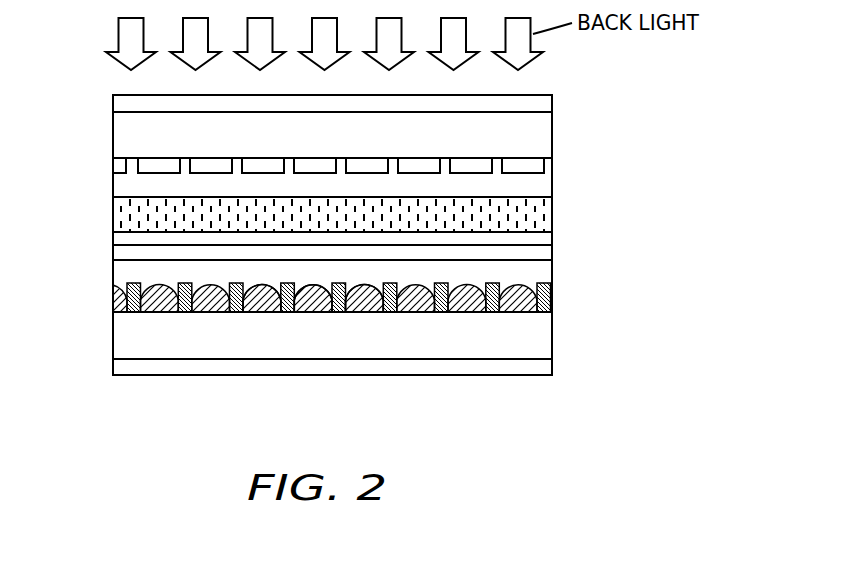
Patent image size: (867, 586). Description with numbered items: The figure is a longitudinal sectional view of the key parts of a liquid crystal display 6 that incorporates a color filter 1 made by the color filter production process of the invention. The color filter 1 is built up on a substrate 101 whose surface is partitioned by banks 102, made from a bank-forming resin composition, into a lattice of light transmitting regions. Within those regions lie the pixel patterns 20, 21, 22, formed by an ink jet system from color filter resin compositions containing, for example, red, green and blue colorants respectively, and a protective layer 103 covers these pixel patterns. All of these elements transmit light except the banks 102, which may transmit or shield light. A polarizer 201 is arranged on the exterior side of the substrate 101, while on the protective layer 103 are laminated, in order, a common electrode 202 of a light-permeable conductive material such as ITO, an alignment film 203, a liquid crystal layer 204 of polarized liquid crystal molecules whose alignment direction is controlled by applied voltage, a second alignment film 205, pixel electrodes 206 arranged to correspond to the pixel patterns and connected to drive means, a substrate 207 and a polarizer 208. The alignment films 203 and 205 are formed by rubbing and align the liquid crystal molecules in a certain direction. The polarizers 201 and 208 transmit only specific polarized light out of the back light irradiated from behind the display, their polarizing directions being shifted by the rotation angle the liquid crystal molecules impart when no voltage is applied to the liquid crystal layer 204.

The color filter 1 is at (101, 262).
The liquid crystal display 6 is at (68, 95).
The pixel pattern 20 is at (310, 312).
The pixel pattern 21 is at (363, 312).
The pixel pattern 22 is at (420, 312).
The substrate 101 is at (553, 340).
The banks 102 is at (553, 300).
The protective layer 103 is at (553, 280).
The polarizer 201 is at (553, 370).
The common electrode 202 is at (553, 258).
The alignment film 203 is at (553, 236).
The liquid crystal layer 204 is at (553, 214).
The alignment film 205 is at (553, 183).
The pixel electrodes 206 is at (536, 165).
The substrate 207 is at (552, 126).
The polarizer 208 is at (556, 97).